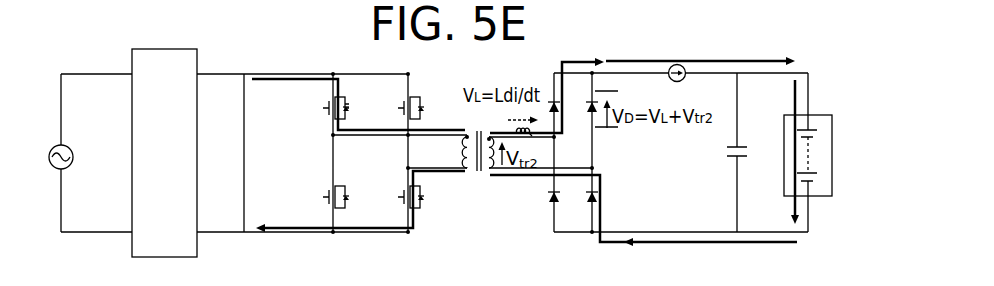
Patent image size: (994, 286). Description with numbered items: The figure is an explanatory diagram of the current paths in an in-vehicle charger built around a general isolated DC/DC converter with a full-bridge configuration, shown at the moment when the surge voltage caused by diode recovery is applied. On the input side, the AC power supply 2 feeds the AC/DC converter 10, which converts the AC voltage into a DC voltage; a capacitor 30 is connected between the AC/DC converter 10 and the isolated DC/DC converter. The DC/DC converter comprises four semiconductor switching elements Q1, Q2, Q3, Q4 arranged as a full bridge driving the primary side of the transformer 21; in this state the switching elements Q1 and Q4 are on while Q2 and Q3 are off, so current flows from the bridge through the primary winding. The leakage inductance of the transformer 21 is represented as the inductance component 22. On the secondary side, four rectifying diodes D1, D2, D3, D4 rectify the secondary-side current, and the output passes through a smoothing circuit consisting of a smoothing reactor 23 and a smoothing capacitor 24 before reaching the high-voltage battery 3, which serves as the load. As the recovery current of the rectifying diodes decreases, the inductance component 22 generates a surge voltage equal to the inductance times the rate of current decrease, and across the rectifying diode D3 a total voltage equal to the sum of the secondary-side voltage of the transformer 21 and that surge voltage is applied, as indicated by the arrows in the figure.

The AC power supply 2 is at (52, 148).
The AC/DC converter 10 is at (199, 66).
The capacitor 30 is at (238, 141).
The semiconductor switching element Q1 is at (325, 108).
The semiconductor switching element Q2 is at (325, 197).
The semiconductor switching element Q3 is at (400, 108).
The semiconductor switching element Q4 is at (400, 197).
The transformer 21 is at (470, 137).
The inductance component 22 is at (508, 132).
The rectifying diode D1 is at (550, 97).
The rectifying diode D2 is at (548, 202).
The rectifying diode D3 is at (588, 106).
The rectifying diode D4 is at (587, 199).
The smoothing reactor 23 is at (686, 78).
The smoothing capacitor 24 is at (726, 148).
The high-voltage battery 3 is at (832, 114).